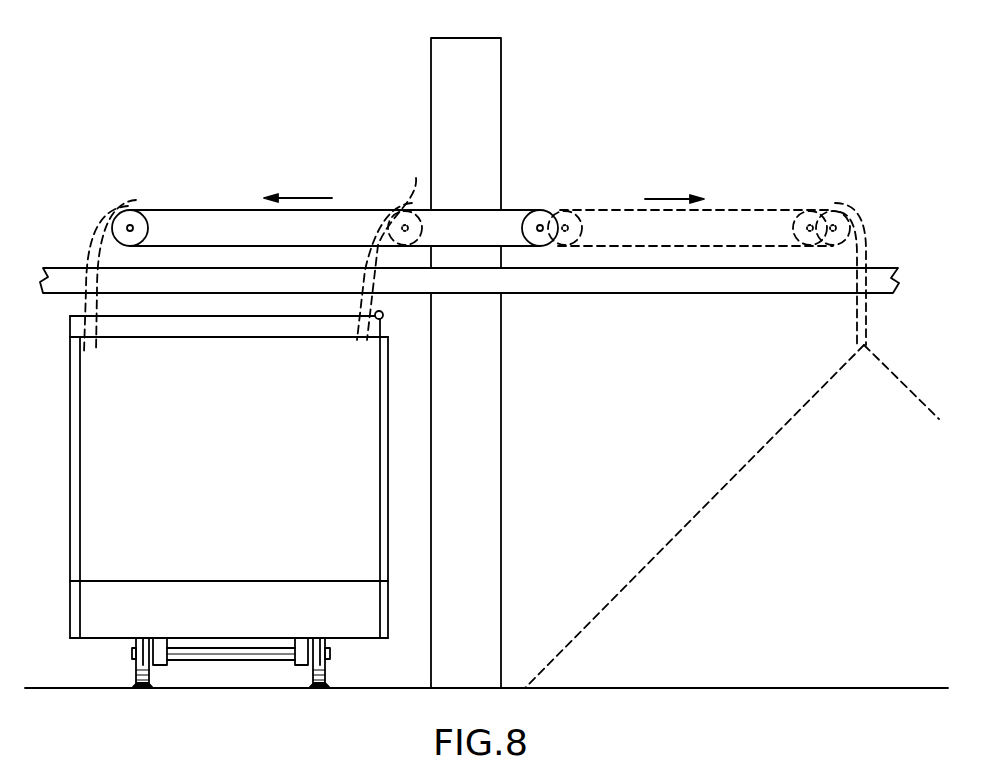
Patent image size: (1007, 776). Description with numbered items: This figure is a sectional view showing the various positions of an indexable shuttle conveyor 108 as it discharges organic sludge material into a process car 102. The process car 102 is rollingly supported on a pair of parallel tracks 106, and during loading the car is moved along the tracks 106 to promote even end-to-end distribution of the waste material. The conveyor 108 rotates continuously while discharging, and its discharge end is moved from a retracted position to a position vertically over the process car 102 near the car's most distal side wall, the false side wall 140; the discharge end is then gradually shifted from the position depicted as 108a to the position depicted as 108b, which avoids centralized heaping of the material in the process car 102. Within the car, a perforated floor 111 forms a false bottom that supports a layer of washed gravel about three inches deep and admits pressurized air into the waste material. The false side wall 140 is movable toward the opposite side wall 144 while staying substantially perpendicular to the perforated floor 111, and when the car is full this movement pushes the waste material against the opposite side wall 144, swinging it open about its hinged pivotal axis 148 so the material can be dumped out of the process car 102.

The process car 102 is at (255, 486).
The tracks 106 is at (135, 683).
The indexable shuttle conveyor 108 is at (212, 210).
The conveyor discharge end position 108a is at (128, 212).
The conveyor discharge end position 108b is at (416, 175).
The perforated floor 111 is at (300, 581).
The false side wall 140 is at (70, 460).
The opposite side wall 144 is at (388, 498).
The hinged pivotal axis 148 is at (383, 315).